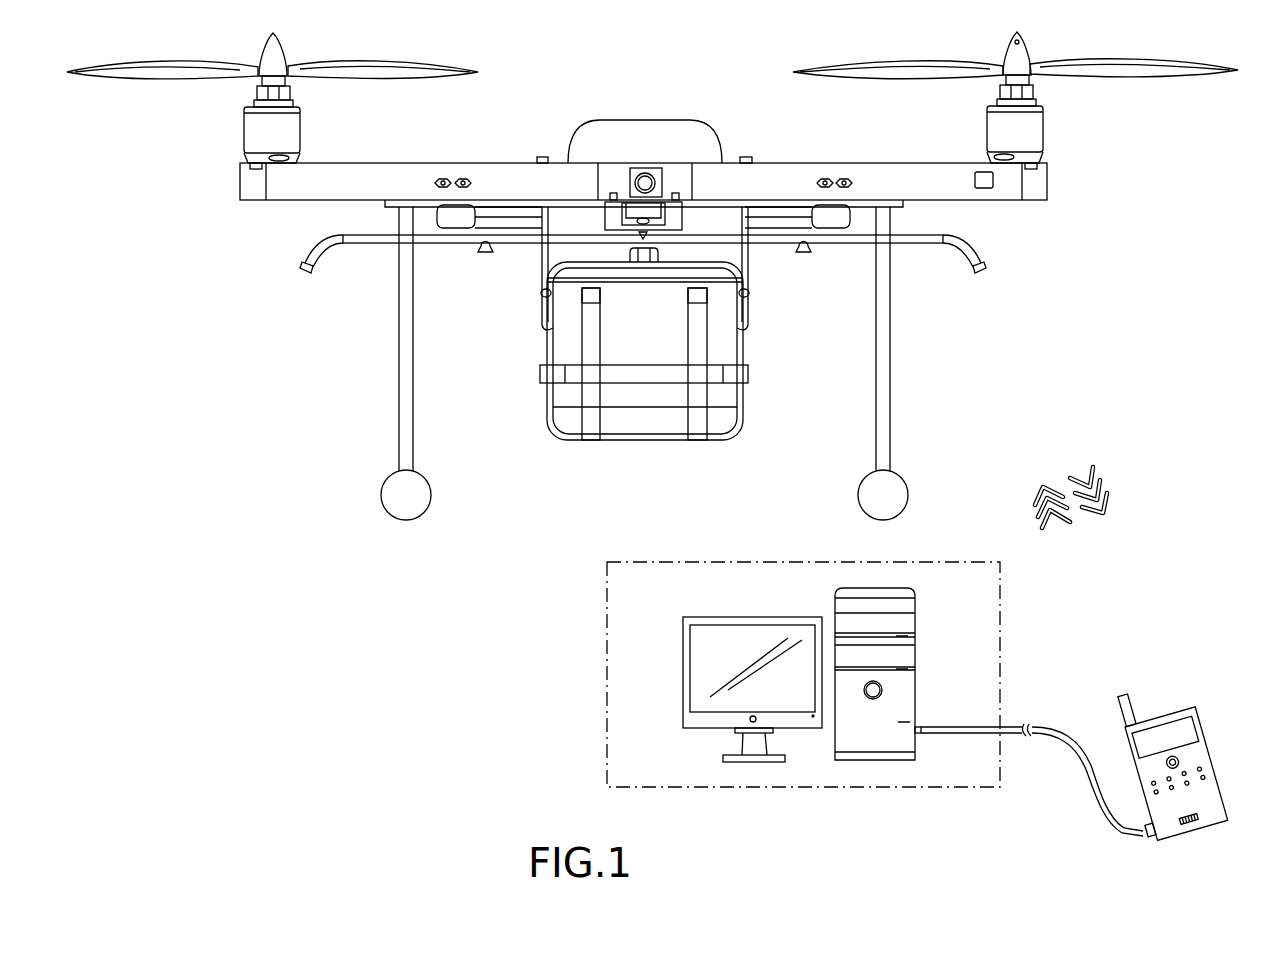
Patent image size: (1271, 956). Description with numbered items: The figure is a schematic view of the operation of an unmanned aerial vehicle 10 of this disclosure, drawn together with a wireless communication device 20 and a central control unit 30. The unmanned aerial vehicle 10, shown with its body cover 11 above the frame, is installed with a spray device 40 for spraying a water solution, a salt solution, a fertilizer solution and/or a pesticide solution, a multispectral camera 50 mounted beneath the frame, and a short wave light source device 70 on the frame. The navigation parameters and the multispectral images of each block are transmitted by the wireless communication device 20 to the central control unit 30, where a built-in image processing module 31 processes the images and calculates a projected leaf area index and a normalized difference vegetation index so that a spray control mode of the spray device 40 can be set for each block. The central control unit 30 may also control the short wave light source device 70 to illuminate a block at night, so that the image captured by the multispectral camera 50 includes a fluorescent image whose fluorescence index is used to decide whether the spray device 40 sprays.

The unmanned aerial vehicle 10 is at (695, 88).
The body cover 11 is at (638, 130).
The wireless communication device 20 is at (975, 173).
The central control unit 30 is at (1000, 603).
The image processing module 31 is at (898, 630).
The spray device 40 is at (327, 248).
The multispectral camera 50 is at (637, 208).
The short wave light source device 70 is at (650, 183).